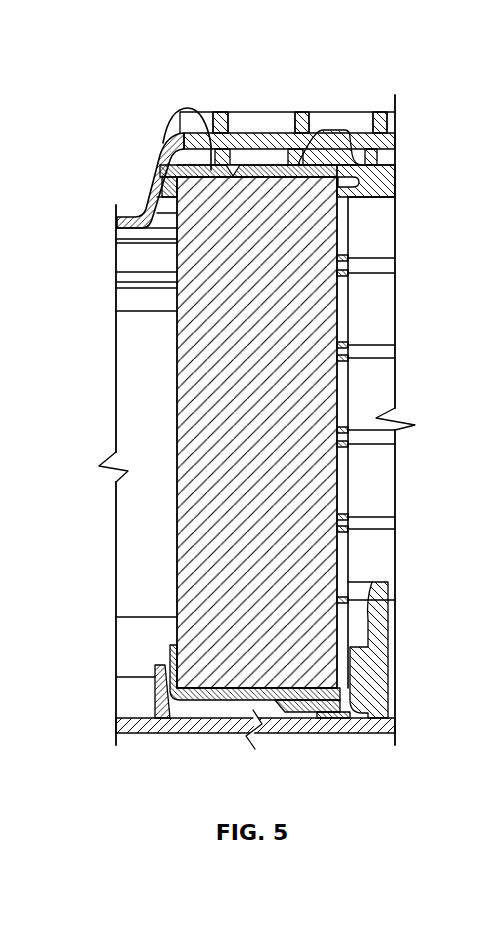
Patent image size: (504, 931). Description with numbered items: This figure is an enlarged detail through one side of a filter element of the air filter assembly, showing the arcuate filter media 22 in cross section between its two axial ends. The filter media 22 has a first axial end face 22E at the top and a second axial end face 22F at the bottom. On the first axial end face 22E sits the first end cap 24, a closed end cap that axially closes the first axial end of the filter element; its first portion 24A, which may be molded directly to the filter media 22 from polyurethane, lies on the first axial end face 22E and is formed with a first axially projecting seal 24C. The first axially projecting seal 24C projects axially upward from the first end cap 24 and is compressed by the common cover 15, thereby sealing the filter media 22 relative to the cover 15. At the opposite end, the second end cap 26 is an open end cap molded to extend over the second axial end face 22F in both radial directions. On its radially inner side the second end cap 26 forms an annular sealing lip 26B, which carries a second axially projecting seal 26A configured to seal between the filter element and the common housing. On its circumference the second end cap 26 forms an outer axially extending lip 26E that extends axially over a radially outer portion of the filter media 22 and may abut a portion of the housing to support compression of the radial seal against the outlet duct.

The common cover 15 is at (162, 156).
The filter media 22 is at (267, 354).
The first axial end face 22E is at (191, 112).
The second axial end face 22F is at (202, 700).
The first end cap 24 is at (400, 181).
The first portion 24A is at (263, 167).
The first axially projecting seal 24C is at (338, 150).
The second end cap 26 is at (350, 720).
The second axially projecting seal 26A is at (305, 713).
The annular sealing lip 26B is at (320, 715).
The outer axially extending lip 26E is at (172, 648).